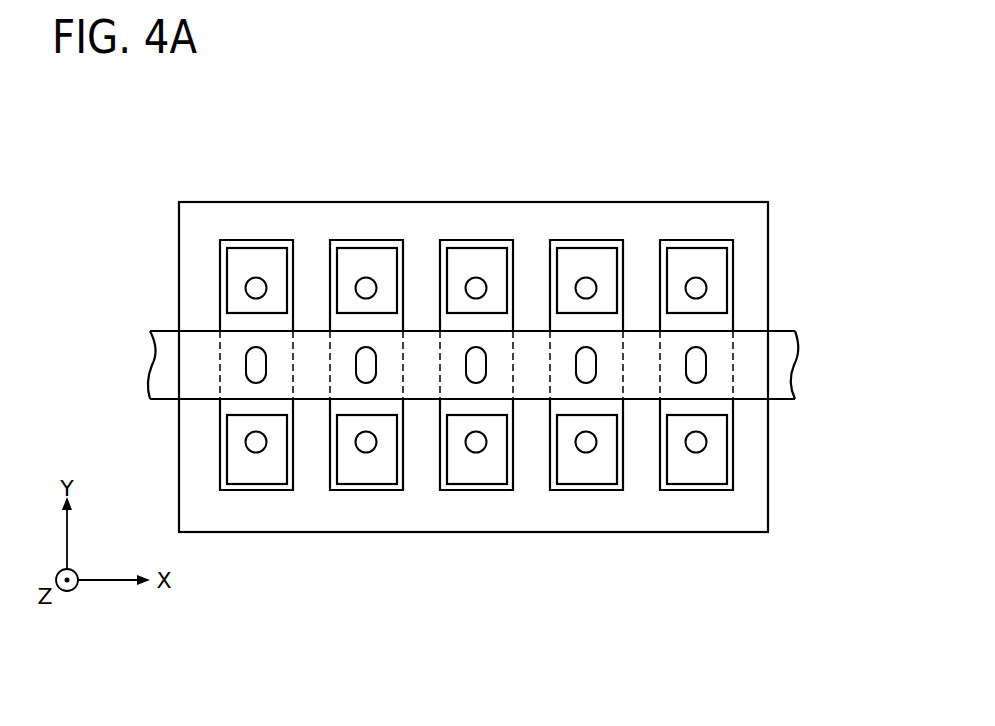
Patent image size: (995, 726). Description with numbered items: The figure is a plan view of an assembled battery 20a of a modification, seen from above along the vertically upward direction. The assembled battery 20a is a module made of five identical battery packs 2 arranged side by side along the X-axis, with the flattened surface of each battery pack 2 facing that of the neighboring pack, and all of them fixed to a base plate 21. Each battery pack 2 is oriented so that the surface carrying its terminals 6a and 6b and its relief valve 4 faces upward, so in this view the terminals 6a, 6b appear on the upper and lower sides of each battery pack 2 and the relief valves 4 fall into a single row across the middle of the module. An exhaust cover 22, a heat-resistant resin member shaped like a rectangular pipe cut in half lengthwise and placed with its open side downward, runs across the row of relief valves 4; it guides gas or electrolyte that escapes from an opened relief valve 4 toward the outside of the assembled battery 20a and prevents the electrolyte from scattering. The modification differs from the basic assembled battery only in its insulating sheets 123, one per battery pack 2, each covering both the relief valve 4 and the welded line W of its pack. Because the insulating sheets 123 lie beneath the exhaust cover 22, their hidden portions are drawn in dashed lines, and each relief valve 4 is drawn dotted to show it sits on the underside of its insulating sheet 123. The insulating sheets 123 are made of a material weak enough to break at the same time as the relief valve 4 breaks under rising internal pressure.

The assembled battery 20a is at (174, 211).
The base plate 21 is at (757, 228).
The exhaust cover 22 is at (777, 384).
The insulating sheet 123 is at (392, 328).
The welded line W is at (243, 274).
The terminal 6a is at (258, 287).
The terminal 6b is at (259, 447).
The battery pack 2 is at (235, 472).
The relief valve 4 is at (474, 369).